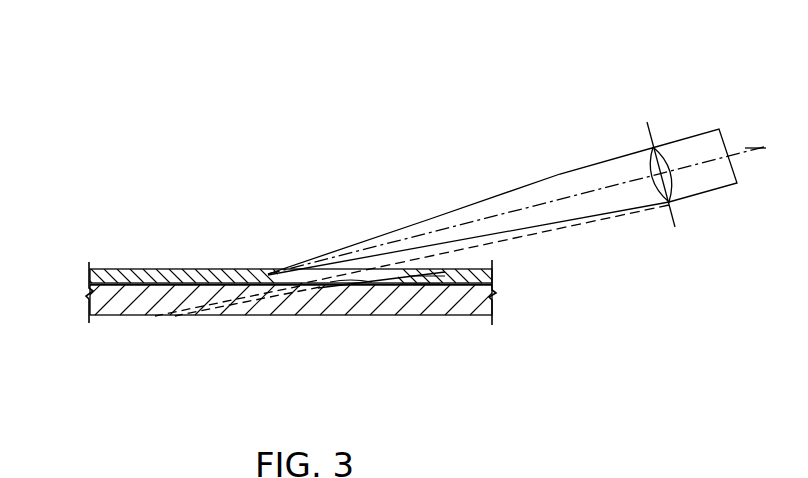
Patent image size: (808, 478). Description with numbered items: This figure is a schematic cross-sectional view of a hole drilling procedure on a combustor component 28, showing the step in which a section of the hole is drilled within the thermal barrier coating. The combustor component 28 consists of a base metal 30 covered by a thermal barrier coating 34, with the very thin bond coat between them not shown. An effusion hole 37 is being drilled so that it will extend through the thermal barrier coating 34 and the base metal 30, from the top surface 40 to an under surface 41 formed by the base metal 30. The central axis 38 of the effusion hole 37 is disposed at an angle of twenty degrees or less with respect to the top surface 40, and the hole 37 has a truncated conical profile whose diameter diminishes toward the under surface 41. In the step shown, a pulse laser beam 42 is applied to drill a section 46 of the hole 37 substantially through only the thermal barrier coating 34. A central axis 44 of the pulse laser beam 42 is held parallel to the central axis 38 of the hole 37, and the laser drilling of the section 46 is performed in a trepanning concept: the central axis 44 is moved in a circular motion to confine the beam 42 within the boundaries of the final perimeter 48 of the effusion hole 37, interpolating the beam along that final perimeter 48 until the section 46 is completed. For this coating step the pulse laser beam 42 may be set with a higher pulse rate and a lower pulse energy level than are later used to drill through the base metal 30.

The combustor component 28 is at (467, 343).
The base metal 30 is at (495, 306).
The thermal barrier coating 34 is at (495, 277).
The effusion hole 37 is at (233, 318).
The central axis of the effusion hole 38 is at (153, 322).
The top surface 40 is at (135, 268).
The under surface 41 is at (420, 284).
The pulse laser beam 42 is at (547, 180).
The central axis of the pulse laser beam 44 is at (752, 148).
The section of the hole 46 is at (350, 285).
The final perimeter 48 is at (425, 278).